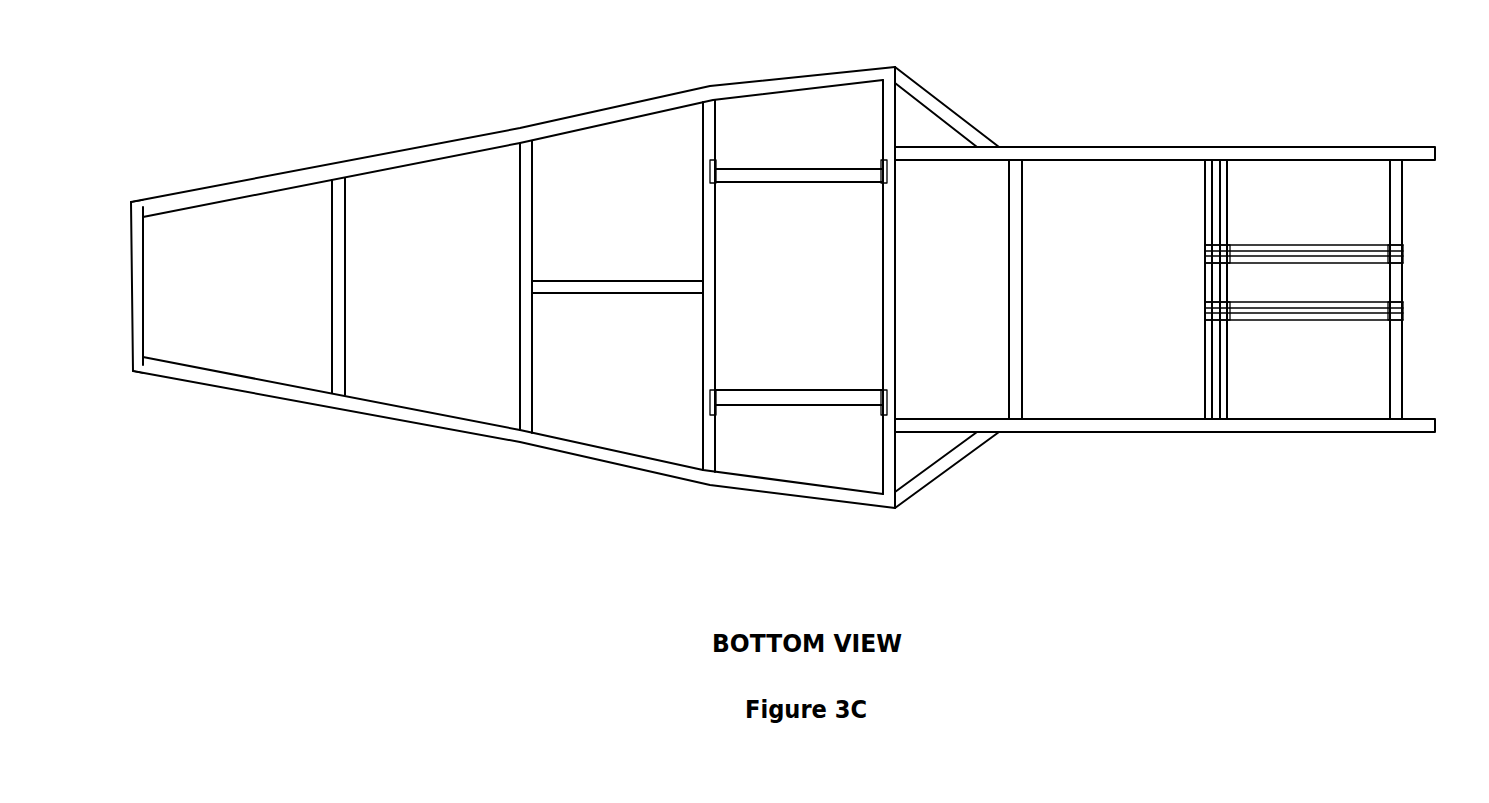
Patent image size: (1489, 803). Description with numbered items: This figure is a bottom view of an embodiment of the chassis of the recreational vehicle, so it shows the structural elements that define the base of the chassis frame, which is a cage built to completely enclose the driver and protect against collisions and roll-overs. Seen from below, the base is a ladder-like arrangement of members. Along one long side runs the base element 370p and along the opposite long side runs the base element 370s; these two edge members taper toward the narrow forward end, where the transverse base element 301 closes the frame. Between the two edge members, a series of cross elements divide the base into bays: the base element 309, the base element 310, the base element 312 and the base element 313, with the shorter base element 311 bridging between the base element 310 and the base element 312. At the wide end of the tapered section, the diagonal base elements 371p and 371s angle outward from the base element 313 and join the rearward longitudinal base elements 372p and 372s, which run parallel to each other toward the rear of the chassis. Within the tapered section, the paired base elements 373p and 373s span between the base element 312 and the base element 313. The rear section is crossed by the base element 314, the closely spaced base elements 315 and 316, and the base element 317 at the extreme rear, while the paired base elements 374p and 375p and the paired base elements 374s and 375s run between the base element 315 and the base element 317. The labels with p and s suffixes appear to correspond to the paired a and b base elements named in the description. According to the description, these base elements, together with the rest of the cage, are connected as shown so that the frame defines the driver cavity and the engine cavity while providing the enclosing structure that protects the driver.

The base structural element 301 is at (137, 273).
The base structural element 309 is at (337, 255).
The base structural element 310 is at (528, 199).
The base structural element 311 is at (603, 289).
The base structural element 312 is at (709, 251).
The base structural element 313 is at (891, 236).
The base structural element 314 is at (1016, 236).
The base structural element 315 is at (1207, 217).
The base structural element 316 is at (1224, 211).
The base structural element 317 is at (1397, 214).
The port longitudinal edge member 370p is at (200, 197).
The starboard longitudinal edge member 370s is at (232, 386).
The port diagonal member 371p is at (936, 107).
The starboard diagonal member 371s is at (970, 447).
The port aft longitudinal member 372p is at (1136, 152).
The starboard aft longitudinal member 372s is at (1183, 425).
The port cross member 373p is at (744, 177).
The starboard cross member 373s is at (786, 398).
The port cross member 374p is at (1330, 230).
The starboard cross member 374s is at (1253, 315).
The port cross member 375p is at (1332, 259).
The starboard cross member 375s is at (1272, 308).